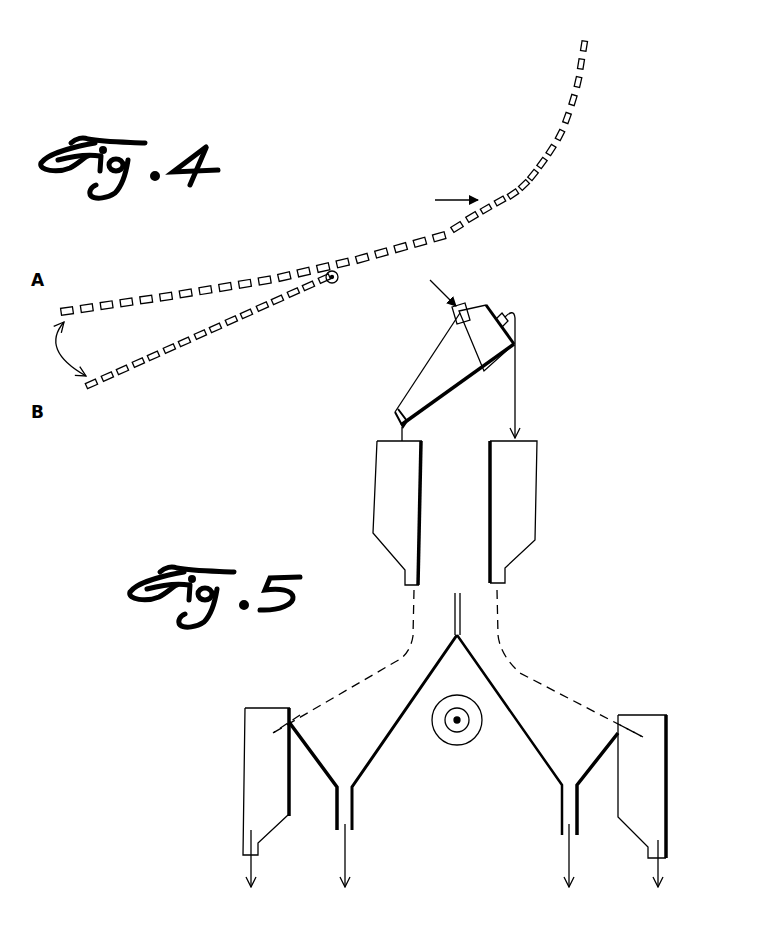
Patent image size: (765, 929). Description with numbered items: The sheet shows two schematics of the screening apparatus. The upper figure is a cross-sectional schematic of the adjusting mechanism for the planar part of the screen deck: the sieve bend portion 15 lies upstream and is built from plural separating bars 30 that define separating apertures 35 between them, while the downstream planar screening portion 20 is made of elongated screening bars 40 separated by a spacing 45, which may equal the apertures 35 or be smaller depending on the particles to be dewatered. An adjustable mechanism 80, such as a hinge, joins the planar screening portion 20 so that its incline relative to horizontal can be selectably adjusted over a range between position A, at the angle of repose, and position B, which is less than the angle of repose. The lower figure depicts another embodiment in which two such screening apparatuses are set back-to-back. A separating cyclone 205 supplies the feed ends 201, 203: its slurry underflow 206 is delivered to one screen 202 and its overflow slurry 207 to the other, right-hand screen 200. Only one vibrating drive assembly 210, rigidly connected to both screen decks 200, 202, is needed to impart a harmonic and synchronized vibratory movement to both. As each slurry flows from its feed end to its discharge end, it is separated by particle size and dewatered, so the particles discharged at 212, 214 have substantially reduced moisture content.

In FIG. 4, the sieve bend portion 15 is at (443, 196).
In FIG. 4, the planar screening portion 20 is at (163, 282).
In FIG. 4, the separating bars 30 is at (438, 237).
In FIG. 4, the separating apertures 35 is at (436, 236).
In FIG. 4, the screening bars 40 is at (128, 306).
In FIG. 4, the spacing 45 is at (75, 316).
In FIG. 4, the adjustable mechanism 80 is at (338, 281).
In FIG. 5, the screen 200 is at (558, 695).
In FIG. 5, the feed end 201 is at (500, 618).
In FIG. 5, the screen 202 is at (334, 697).
In FIG. 5, the feed end 203 is at (412, 612).
In FIG. 5, the separating cyclone 205 is at (440, 374).
In FIG. 5, the slurry underflow 206 is at (400, 424).
In FIG. 5, the overflow slurry 207 is at (517, 388).
In FIG. 5, the vibrating drive assembly 210 is at (470, 746).
In FIG. 5, the discharge 212 is at (667, 777).
In FIG. 5, the discharge 214 is at (250, 745).